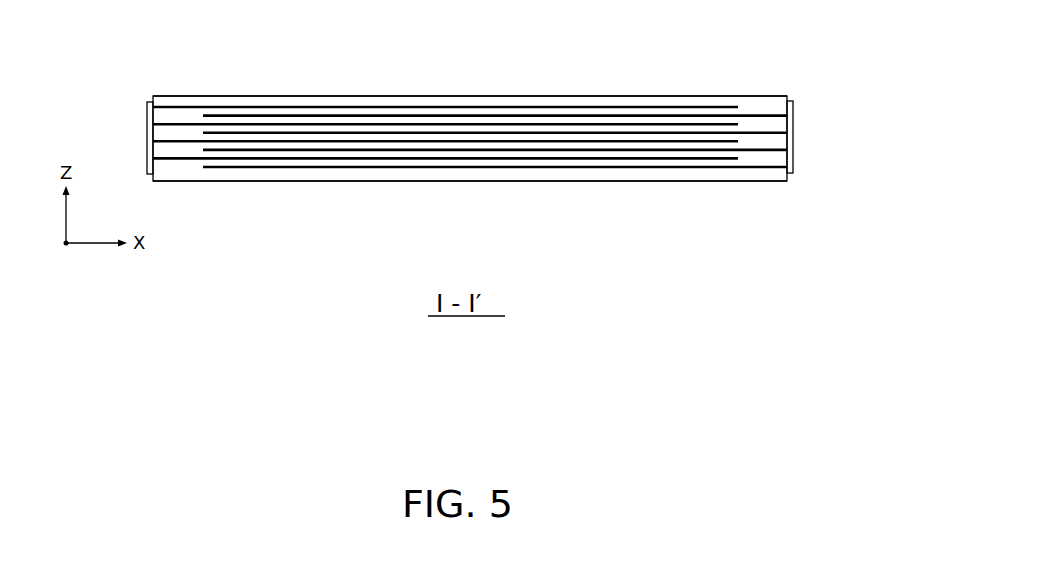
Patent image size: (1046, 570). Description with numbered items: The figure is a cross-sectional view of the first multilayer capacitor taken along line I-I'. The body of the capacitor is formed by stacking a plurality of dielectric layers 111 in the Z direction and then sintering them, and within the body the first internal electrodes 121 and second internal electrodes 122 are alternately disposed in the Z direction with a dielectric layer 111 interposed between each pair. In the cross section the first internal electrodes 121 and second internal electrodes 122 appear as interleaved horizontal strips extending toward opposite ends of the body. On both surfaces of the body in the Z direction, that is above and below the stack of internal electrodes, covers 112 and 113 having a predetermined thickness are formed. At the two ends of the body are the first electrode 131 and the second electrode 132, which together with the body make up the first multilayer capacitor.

The dielectric layer 111 is at (777, 142).
The cover 112 is at (412, 99).
The cover 113 is at (543, 181).
The first internal electrode 121 is at (312, 107).
The second internal electrode 122 is at (453, 113).
The first electrode 131 is at (147, 125).
The second electrode 132 is at (793, 125).